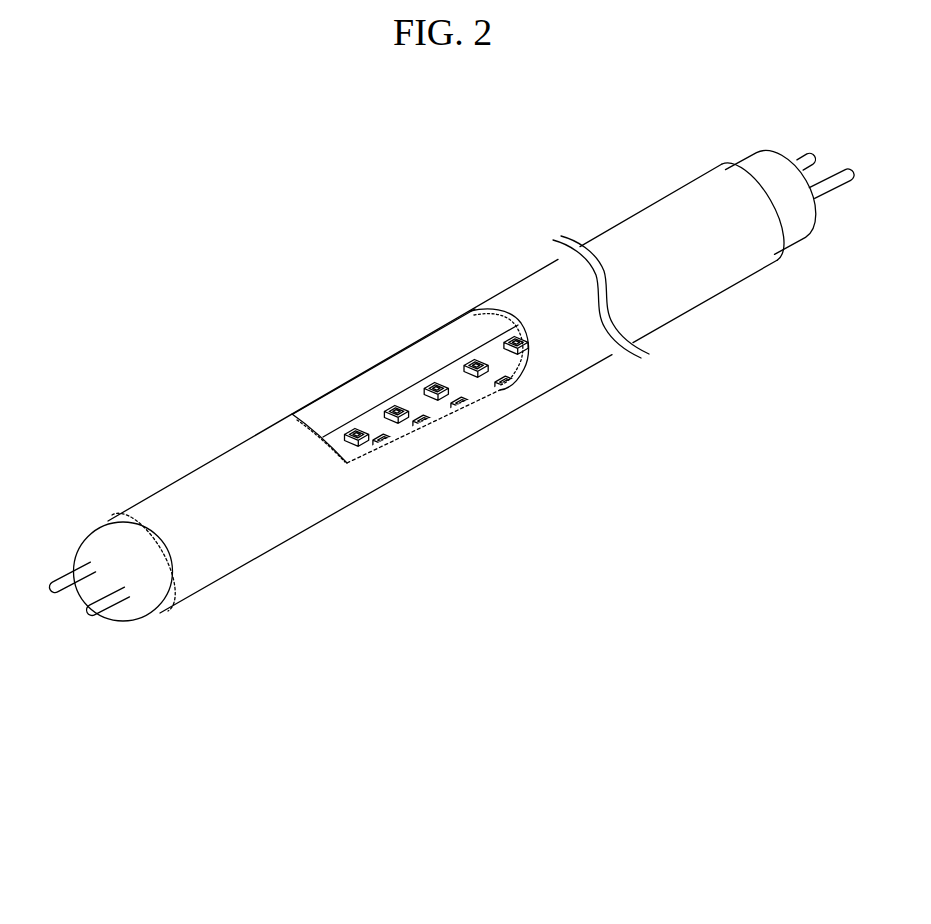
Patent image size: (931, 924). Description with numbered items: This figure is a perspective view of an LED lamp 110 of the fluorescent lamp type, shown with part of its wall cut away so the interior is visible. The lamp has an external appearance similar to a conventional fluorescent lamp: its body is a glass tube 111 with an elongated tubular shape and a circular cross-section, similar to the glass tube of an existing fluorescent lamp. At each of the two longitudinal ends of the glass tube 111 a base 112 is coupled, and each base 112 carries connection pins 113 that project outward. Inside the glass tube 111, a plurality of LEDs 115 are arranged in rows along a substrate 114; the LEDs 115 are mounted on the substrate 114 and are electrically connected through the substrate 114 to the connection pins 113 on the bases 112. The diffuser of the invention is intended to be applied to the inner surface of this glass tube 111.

The LED lamp 110 is at (216, 373).
The glass tube 111 is at (353, 367).
The base 112 is at (120, 613).
The connection pin 113 is at (70, 578).
The substrate 114 is at (419, 393).
The LED 115 is at (483, 357).